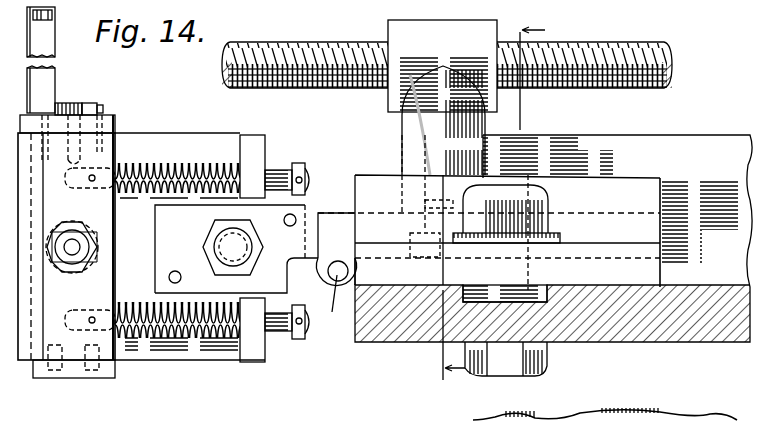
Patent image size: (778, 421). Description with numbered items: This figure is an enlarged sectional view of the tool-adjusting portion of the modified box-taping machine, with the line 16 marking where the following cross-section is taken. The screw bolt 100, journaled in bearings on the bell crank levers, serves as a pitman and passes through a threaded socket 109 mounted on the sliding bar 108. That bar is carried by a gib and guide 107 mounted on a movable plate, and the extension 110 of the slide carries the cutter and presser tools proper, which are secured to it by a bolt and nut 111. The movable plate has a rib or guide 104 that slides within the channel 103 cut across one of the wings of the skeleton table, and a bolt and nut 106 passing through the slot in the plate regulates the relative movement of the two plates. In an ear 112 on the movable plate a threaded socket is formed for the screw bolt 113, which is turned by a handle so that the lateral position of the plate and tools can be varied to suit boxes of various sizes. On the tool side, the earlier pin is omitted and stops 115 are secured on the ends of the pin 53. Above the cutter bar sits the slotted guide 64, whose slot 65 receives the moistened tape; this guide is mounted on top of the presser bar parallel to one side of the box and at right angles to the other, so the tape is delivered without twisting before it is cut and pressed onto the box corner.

The section line 16 is at (487, 208).
The pin 53 is at (278, 166).
The guide 64 is at (47, 43).
The slot 65 is at (50, 15).
The screw bolt 100 is at (590, 52).
The channel 103 is at (625, 268).
The rib or guide 104 is at (512, 292).
The bolt and nut 106 is at (513, 213).
The gib and guide 107 is at (628, 202).
The sliding bar 108 is at (738, 128).
The threaded socket 109 is at (415, 30).
The extension 110 is at (183, 223).
The bolt and nut 111 is at (252, 246).
The ear 112 is at (347, 272).
The screw bolt 113 is at (340, 305).
The stops 115 is at (301, 168).